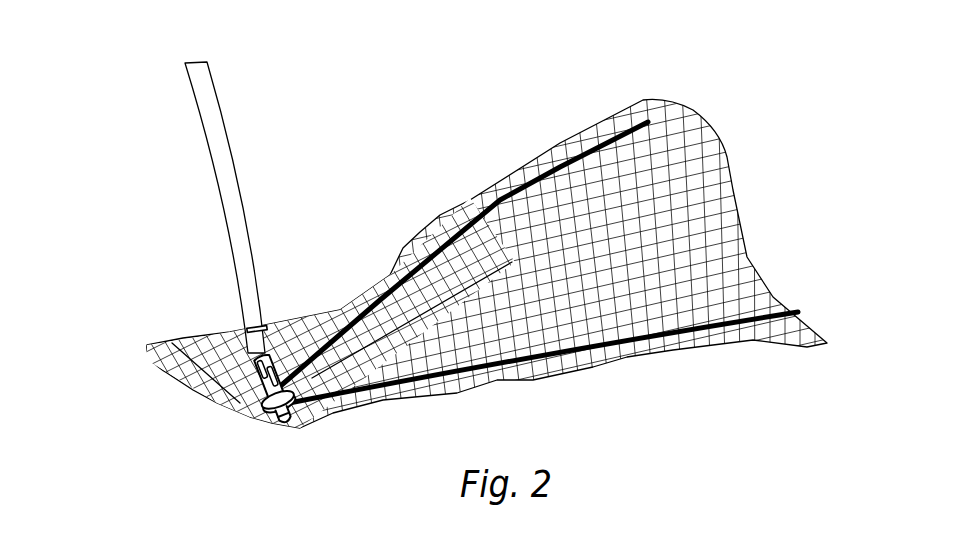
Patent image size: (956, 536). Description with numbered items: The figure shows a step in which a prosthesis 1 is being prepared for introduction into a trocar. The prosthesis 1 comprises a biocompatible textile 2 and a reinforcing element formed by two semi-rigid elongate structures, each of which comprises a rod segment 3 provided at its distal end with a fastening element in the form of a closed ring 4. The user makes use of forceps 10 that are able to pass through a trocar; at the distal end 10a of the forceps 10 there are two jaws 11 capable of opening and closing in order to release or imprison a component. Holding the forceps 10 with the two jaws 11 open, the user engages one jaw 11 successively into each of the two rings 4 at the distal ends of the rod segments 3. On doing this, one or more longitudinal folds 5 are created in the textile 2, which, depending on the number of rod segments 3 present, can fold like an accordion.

The prosthesis 1 is at (666, 382).
The biocompatible textile 2 is at (207, 338).
The rod segment 3 is at (400, 258).
The closed ring 4 is at (256, 420).
The longitudinal fold 5 is at (156, 373).
The forceps 10 is at (181, 127).
The distal end of the forceps 10a is at (220, 428).
The jaw 11 is at (272, 358).